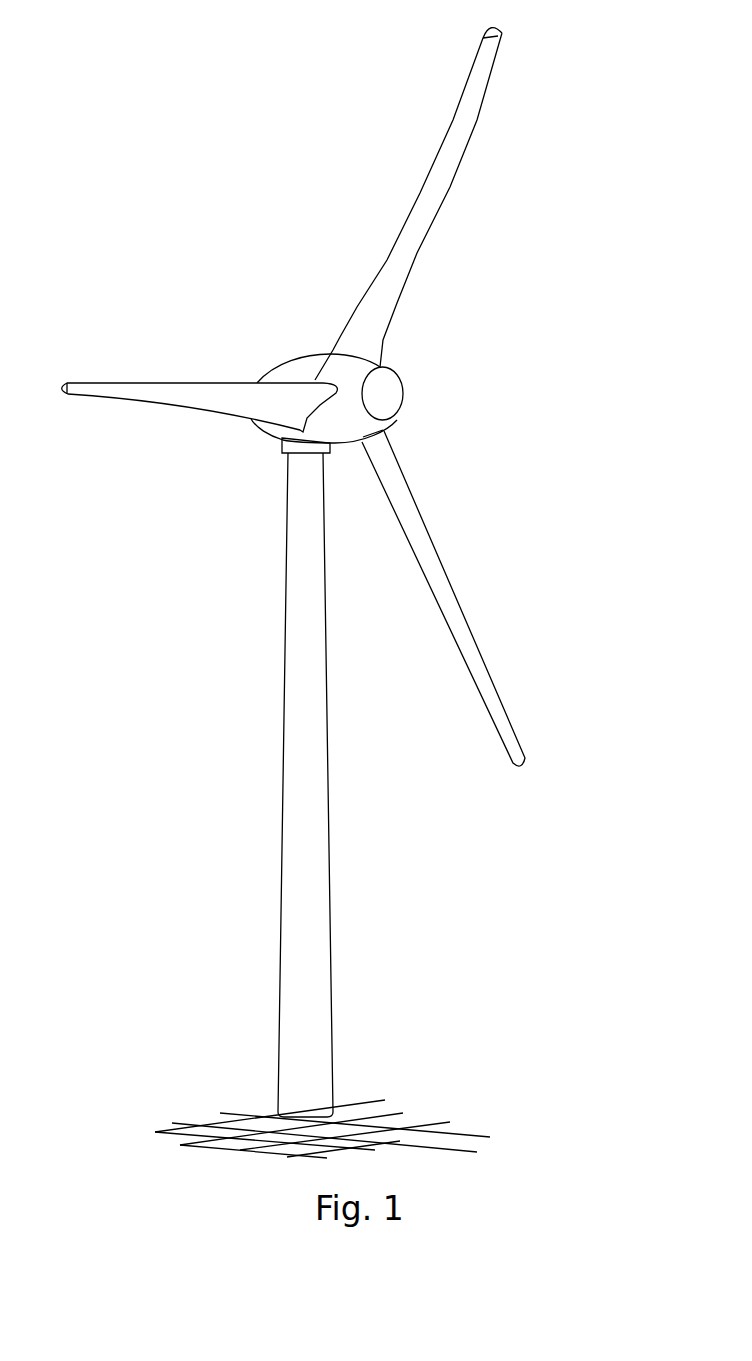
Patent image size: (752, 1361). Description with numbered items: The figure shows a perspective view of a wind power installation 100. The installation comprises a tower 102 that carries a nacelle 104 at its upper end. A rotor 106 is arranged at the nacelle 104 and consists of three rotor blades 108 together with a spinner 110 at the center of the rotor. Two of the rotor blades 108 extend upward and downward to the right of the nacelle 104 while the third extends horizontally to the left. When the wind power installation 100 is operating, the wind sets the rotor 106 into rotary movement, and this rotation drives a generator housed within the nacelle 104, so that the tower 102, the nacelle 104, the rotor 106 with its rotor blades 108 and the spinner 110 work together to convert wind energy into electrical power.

The wind power installation 100 is at (245, 520).
The tower 102 is at (318, 860).
The nacelle 104 is at (302, 373).
The rotor 106 is at (470, 320).
The rotor blades 108 is at (143, 383).
The spinner 110 is at (388, 395).